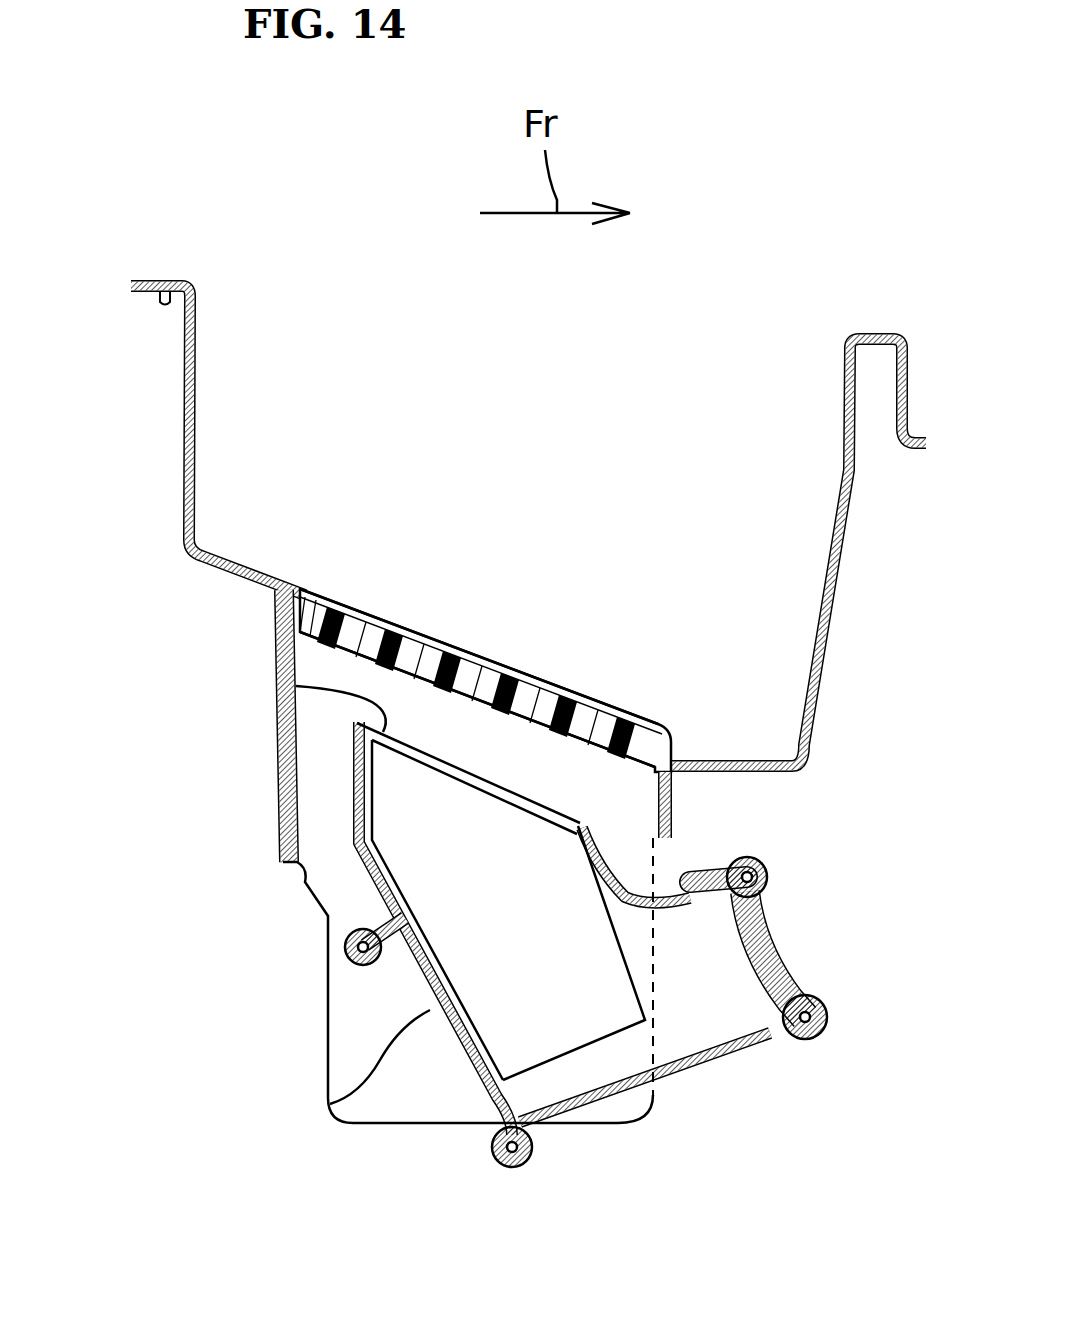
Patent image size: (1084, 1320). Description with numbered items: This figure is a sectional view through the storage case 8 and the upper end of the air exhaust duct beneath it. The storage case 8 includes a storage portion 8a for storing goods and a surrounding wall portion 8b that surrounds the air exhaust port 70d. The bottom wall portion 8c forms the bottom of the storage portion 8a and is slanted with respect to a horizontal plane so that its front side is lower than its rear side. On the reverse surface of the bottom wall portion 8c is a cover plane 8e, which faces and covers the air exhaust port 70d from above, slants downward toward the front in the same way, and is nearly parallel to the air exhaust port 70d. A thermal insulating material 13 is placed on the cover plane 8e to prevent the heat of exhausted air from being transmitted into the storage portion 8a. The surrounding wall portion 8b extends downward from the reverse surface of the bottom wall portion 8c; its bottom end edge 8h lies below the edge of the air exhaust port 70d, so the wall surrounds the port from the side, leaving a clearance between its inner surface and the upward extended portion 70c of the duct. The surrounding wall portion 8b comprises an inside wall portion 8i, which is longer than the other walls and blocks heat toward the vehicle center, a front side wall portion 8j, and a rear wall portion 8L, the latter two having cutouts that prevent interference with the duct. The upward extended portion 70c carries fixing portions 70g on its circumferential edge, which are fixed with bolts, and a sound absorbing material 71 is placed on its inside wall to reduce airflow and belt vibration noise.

The storage case 8 is at (783, 278).
The storage portion 8a is at (826, 520).
The surrounding wall portion 8b is at (244, 700).
The bottom wall portion 8c is at (528, 680).
The cover plane 8e is at (357, 610).
The thermal insulating material 13 is at (410, 638).
The air exhaust port 70d is at (275, 685).
The rear wall portion 8L is at (272, 742).
The sound absorbing material 71 is at (510, 810).
The front side wall portion 8j is at (674, 824).
The fixing portions 70g is at (358, 968).
The bottom end edge 8h is at (305, 880).
The upward extended portion 70c is at (330, 1104).
The inside wall portion 8i is at (391, 1125).